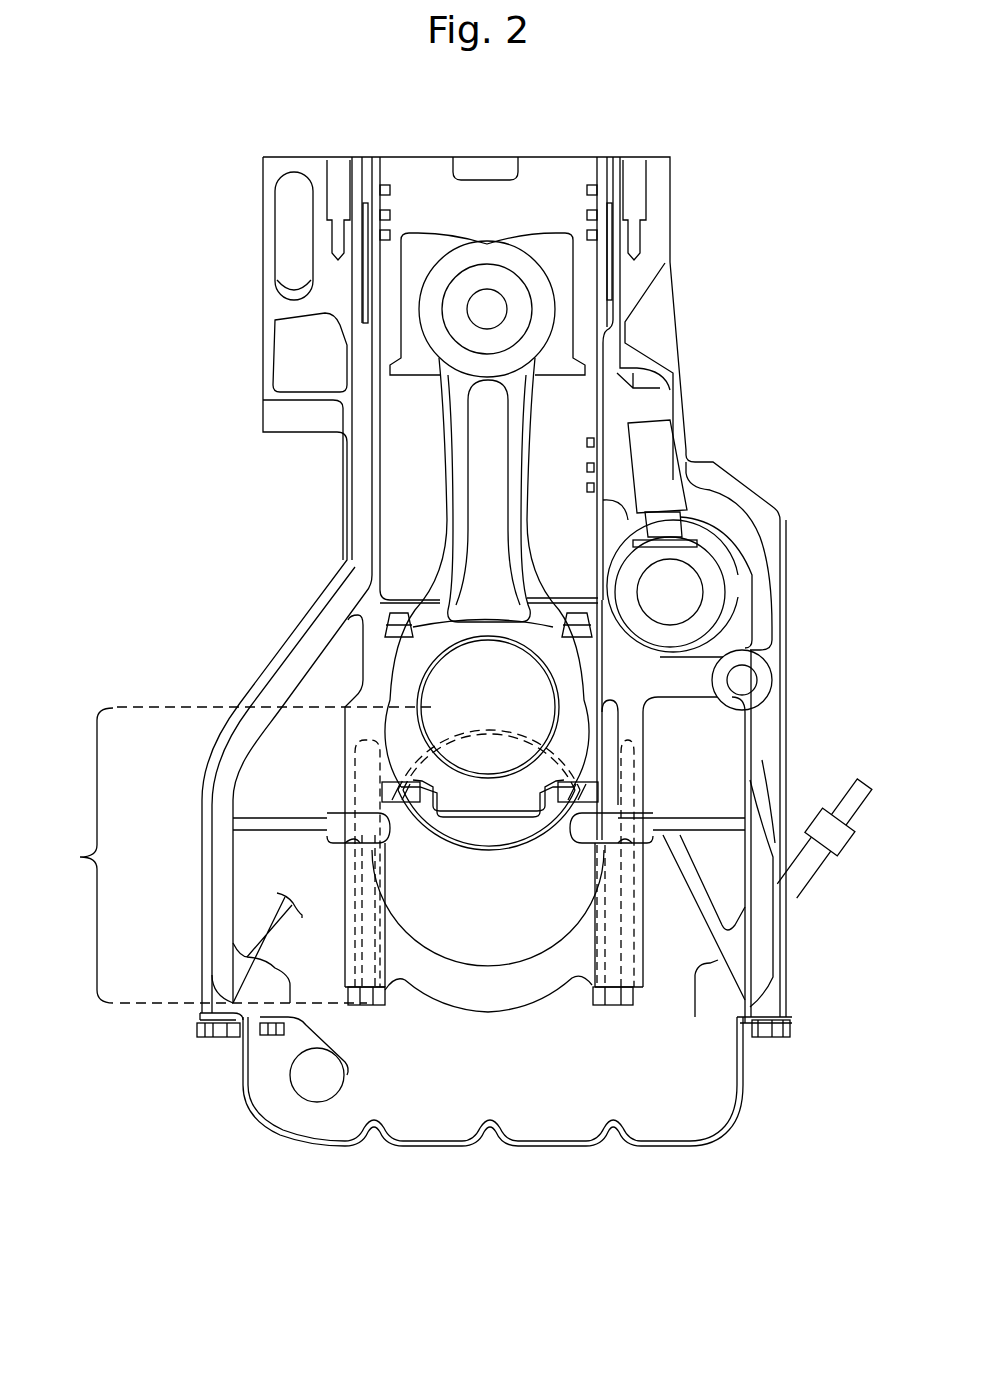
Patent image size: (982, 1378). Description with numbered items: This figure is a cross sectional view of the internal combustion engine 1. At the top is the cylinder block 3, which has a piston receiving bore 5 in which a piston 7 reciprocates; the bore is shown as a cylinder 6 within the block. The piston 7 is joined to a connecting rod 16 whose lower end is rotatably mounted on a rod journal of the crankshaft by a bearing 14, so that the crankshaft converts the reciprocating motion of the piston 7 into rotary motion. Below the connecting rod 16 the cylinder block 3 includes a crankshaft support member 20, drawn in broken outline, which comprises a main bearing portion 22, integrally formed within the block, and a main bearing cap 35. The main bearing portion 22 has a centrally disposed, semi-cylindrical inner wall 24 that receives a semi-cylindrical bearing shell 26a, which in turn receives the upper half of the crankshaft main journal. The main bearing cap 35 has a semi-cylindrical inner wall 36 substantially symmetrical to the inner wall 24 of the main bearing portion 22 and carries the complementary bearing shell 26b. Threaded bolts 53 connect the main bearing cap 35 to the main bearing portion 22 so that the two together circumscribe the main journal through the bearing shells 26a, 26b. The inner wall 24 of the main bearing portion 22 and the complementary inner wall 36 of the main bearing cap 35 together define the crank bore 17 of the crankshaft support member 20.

The internal combustion engine 1 is at (245, 169).
The cylinder block 3 is at (365, 478).
The piston receiving bores 5 is at (365, 227).
The cylinder bore 6 is at (375, 172).
The pistons 7 is at (542, 172).
The bearings 14 is at (478, 657).
The connecting rods 16 is at (528, 430).
The crank bore 17 is at (556, 878).
The crankshaft support members 20 is at (80, 857).
The main bearing portion 22 is at (373, 816).
The semi-cylindrical inner wall 24 is at (488, 737).
The semi-cylindrical bearing shell 26a is at (638, 807).
The semi-cylindrical bearing shell 26b is at (527, 908).
The main bearing cap 35 is at (444, 930).
The semi-cylindrical inner wall 36 is at (433, 905).
The threaded bolts 53 is at (368, 995).